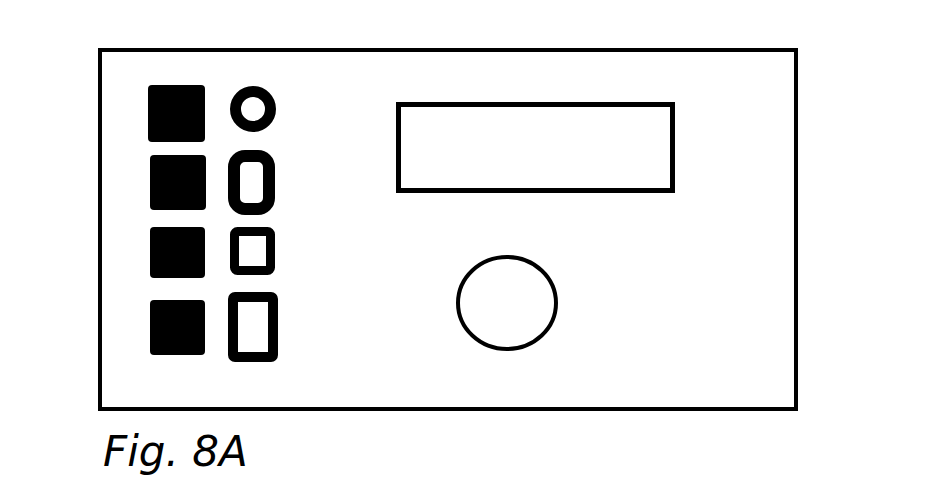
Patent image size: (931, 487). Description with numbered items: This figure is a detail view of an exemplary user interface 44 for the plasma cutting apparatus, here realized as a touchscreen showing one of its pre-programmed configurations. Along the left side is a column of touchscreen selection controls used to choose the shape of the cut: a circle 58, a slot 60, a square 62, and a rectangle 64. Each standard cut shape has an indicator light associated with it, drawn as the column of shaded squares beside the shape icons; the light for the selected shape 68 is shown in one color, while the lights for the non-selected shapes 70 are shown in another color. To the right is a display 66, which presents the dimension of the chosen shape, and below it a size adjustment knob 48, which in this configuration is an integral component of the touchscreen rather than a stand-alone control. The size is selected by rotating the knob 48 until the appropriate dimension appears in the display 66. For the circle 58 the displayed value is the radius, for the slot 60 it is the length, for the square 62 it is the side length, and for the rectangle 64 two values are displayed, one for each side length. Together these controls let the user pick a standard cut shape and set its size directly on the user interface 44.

The user interface 44 is at (481, 67).
The size adjustment knob 48 is at (537, 302).
The circle 58 is at (272, 93).
The slot 60 is at (275, 189).
The square 62 is at (258, 255).
The rectangle 64 is at (280, 332).
The display 66 is at (647, 105).
The selected shape 68 is at (152, 116).
The non-selected shapes 70 is at (162, 190).